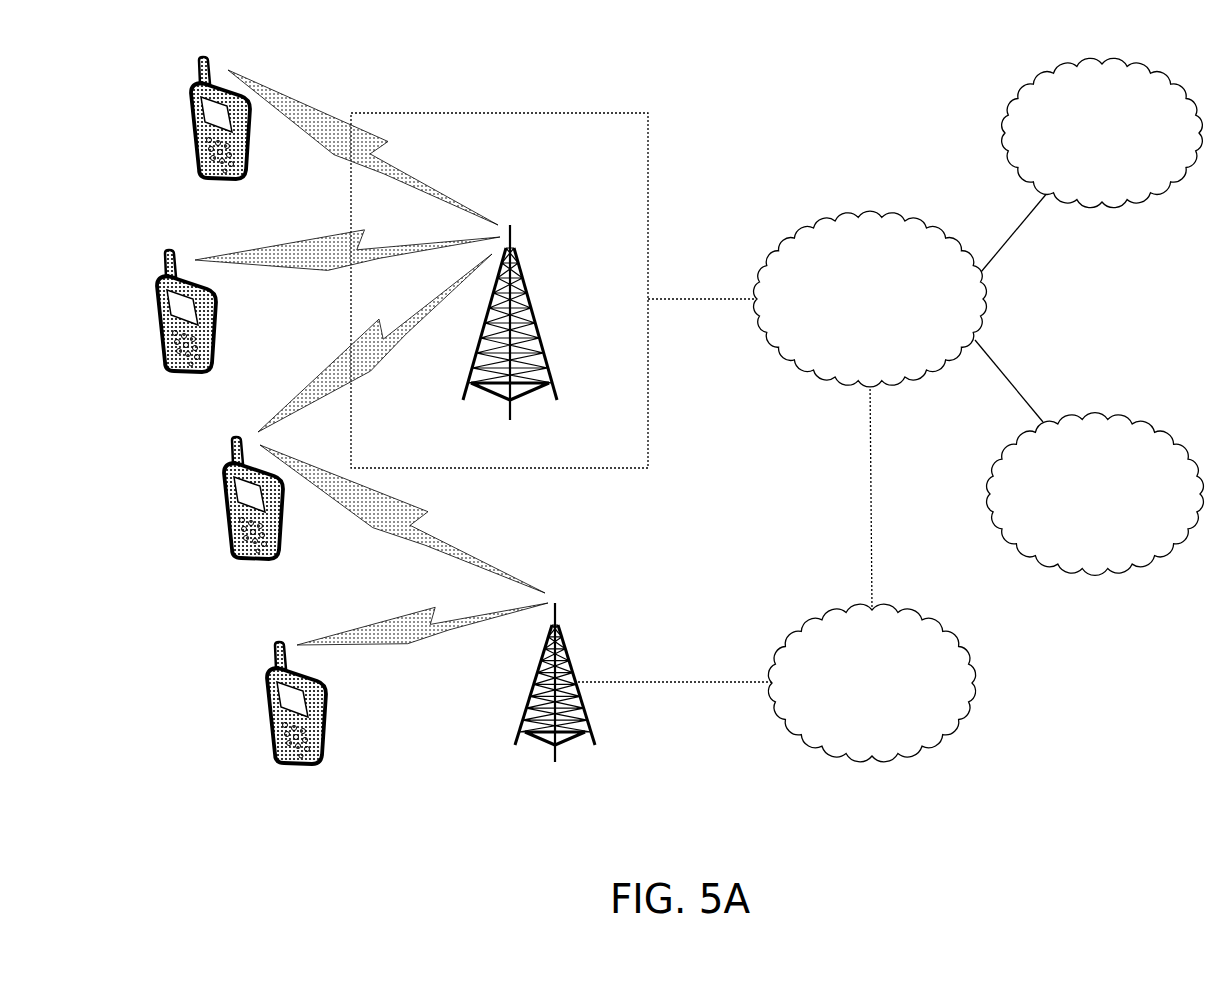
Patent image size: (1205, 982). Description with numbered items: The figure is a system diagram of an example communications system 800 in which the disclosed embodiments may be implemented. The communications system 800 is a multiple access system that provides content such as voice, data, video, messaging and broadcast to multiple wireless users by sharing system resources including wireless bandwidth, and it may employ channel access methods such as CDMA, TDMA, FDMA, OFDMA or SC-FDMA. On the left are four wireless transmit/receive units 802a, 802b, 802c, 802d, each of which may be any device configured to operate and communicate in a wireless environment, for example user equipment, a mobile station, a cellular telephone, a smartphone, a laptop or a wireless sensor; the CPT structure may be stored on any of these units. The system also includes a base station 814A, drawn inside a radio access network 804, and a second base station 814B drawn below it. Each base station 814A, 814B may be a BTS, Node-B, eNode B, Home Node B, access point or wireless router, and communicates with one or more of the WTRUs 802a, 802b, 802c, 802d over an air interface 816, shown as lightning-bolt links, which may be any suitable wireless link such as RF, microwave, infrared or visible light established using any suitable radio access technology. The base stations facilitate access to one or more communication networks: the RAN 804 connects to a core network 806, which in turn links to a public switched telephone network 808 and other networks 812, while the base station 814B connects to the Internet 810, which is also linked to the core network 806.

The communications system 800 is at (724, 35).
The wireless transmit/receive unit (WTRU) 802a is at (220, 140).
The wireless transmit/receive unit (WTRU) 802b is at (187, 336).
The wireless transmit/receive unit (WTRU) 802c is at (253, 519).
The wireless transmit/receive unit (WTRU) 802d is at (298, 723).
The radio access network (RAN) 804 is at (583, 153).
The core network 806 is at (850, 298).
The public switched telephone network (PSTN) 808 is at (1082, 129).
The Internet 810 is at (852, 678).
The other networks 812 is at (1075, 476).
The base station 814A is at (510, 340).
The base station 814B is at (555, 704).
The air interface 816 is at (371, 357).